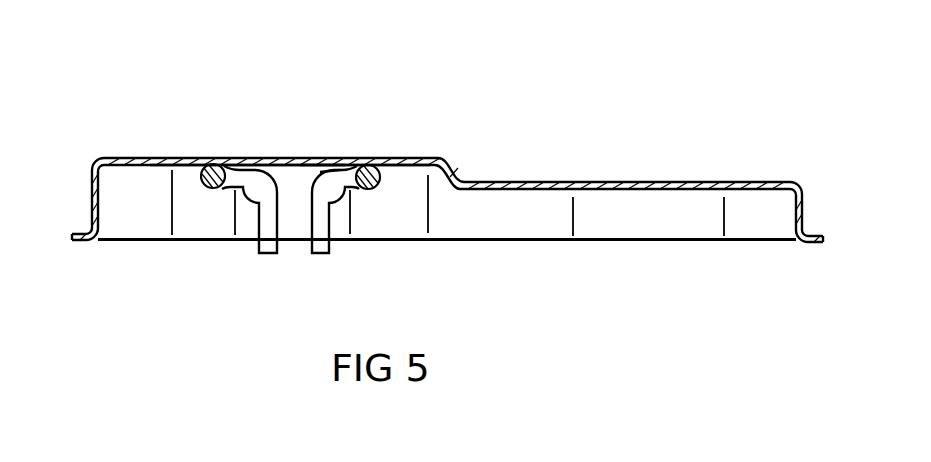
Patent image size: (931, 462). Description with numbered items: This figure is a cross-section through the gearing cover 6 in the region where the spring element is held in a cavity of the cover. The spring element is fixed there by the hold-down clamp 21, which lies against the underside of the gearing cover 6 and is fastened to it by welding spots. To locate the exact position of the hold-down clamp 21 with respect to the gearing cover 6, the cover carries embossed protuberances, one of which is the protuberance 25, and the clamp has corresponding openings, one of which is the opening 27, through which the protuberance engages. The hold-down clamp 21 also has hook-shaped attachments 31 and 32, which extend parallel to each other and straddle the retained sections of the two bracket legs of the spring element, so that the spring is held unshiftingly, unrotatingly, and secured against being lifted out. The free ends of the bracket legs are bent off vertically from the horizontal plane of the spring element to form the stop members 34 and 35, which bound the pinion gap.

The gearing cover 6 is at (132, 158).
The hold-down clamp 21 is at (282, 168).
The embossed protuberance 25 is at (321, 167).
The opening 27 is at (325, 168).
The hook-shaped attachment 31 is at (212, 190).
The hook-shaped attachment 32 is at (379, 187).
The stop member 34 is at (265, 253).
The stop member 35 is at (321, 253).